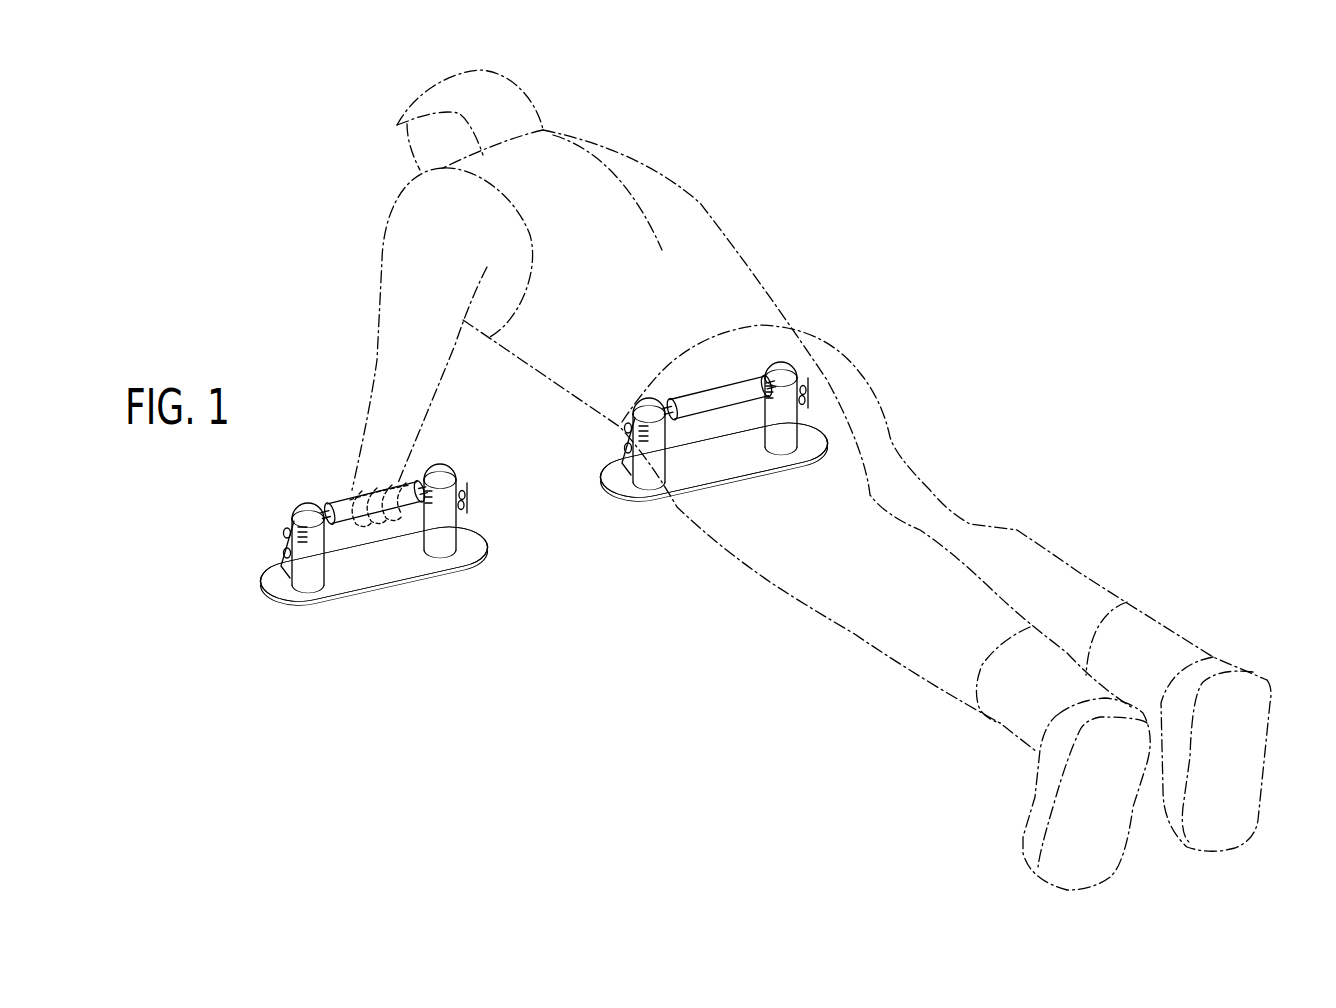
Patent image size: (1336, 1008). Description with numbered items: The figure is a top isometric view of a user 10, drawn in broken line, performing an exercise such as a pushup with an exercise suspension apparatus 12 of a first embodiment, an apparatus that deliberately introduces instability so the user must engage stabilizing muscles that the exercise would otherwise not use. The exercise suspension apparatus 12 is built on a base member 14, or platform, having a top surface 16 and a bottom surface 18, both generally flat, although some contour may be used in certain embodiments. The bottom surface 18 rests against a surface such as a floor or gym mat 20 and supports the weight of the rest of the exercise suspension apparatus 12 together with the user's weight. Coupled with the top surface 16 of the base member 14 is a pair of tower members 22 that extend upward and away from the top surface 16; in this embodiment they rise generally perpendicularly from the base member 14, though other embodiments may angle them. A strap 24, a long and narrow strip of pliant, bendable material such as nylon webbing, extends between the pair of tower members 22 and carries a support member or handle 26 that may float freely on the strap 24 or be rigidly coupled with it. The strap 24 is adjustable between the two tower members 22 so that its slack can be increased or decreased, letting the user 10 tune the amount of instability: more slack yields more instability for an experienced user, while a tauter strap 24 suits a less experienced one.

The user 10 is at (722, 181).
The exercise suspension apparatus 12 is at (654, 556).
The base member 14 is at (603, 488).
The top surface 16 is at (608, 480).
The bottom surface 18 is at (626, 511).
The gym mat 20 is at (497, 706).
The tower members 22 is at (437, 543).
The strap 24 is at (319, 487).
The handle 26 is at (407, 478).